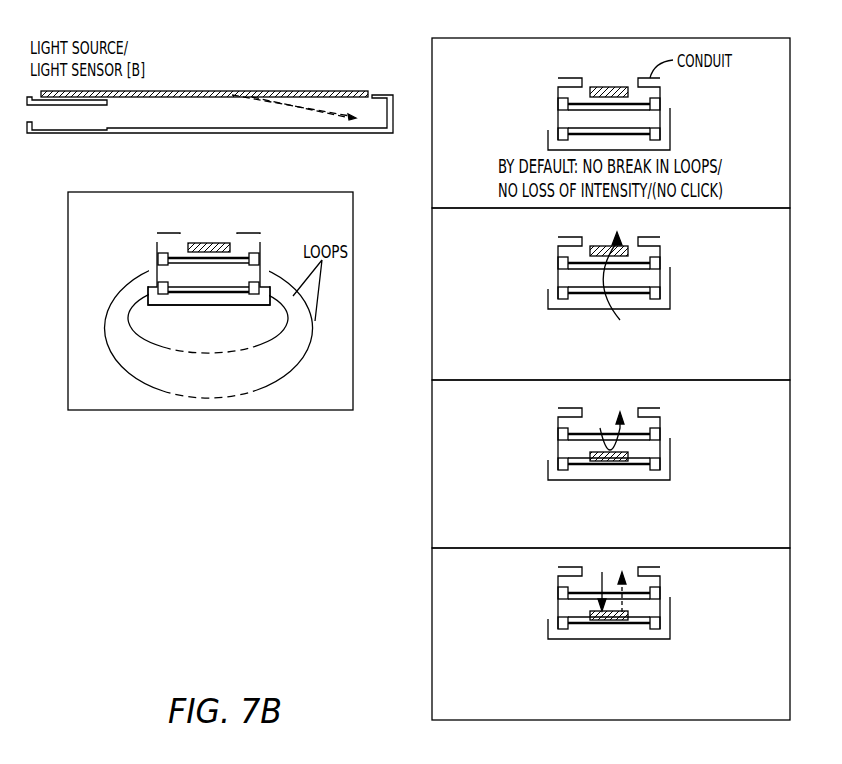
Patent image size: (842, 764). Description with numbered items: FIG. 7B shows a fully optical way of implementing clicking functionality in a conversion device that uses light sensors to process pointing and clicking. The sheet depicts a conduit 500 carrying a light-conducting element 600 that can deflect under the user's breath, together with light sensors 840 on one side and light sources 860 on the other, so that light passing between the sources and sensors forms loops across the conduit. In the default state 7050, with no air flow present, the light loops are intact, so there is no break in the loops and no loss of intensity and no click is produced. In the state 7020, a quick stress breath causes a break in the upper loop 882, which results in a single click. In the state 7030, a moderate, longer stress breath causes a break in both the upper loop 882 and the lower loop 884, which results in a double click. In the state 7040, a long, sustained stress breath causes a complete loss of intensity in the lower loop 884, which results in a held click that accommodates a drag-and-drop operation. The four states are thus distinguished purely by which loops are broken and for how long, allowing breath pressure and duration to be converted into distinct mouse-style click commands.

The conduit 500 is at (209, 134).
The light-conducting element 600 is at (289, 90).
The light sensors 840 is at (560, 133).
The light sources 860 is at (658, 132).
The upper loop 882 is at (645, 260).
The lower loop 884 is at (577, 292).
The state 7020 is at (432, 293).
The state 7030 is at (432, 463).
The state 7040 is at (432, 633).
The state 7050 is at (432, 70).